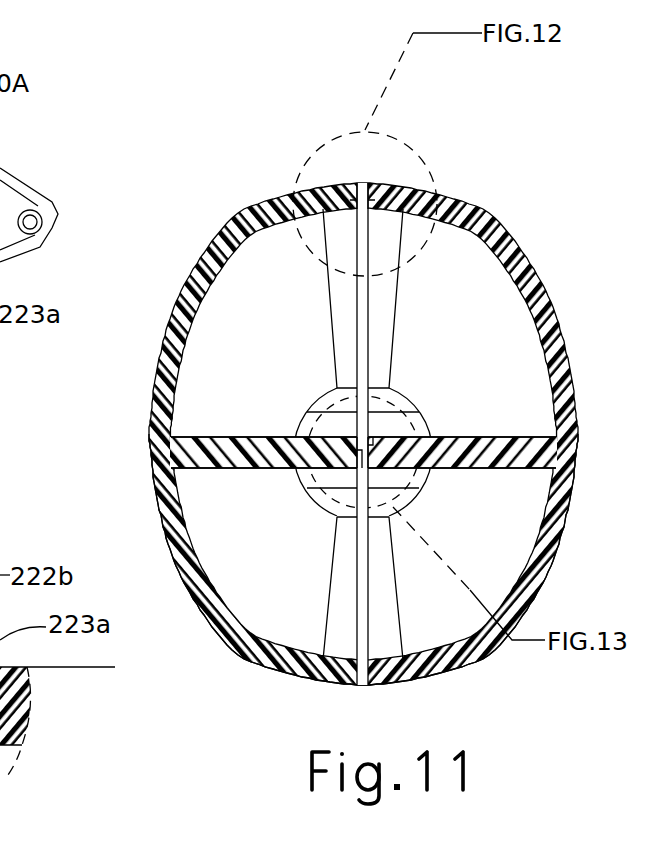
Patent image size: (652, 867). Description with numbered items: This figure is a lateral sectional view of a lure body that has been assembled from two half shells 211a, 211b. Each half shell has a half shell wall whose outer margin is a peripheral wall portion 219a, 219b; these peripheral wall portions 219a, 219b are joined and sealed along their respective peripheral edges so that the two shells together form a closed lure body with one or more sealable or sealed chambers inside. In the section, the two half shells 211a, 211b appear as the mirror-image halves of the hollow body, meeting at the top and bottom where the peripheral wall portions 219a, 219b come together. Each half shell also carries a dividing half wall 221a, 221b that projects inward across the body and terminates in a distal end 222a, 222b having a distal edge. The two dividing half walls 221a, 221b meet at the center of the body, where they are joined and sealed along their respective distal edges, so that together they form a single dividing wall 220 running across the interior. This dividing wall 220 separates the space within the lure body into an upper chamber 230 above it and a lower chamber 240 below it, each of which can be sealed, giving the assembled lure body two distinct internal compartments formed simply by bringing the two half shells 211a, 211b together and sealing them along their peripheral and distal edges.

The half shell 211a is at (505, 212).
The half shell 211b is at (172, 592).
The peripheral wall portion 219a is at (327, 170).
The peripheral wall portion 219b is at (393, 167).
The dividing wall 220 is at (200, 427).
The dividing half wall 221a is at (279, 458).
The dividing half wall 221b is at (446, 450).
The distal end 222a is at (331, 423).
The distal end 222b is at (381, 420).
The upper chamber 230 is at (292, 299).
The lower chamber 240 is at (302, 592).